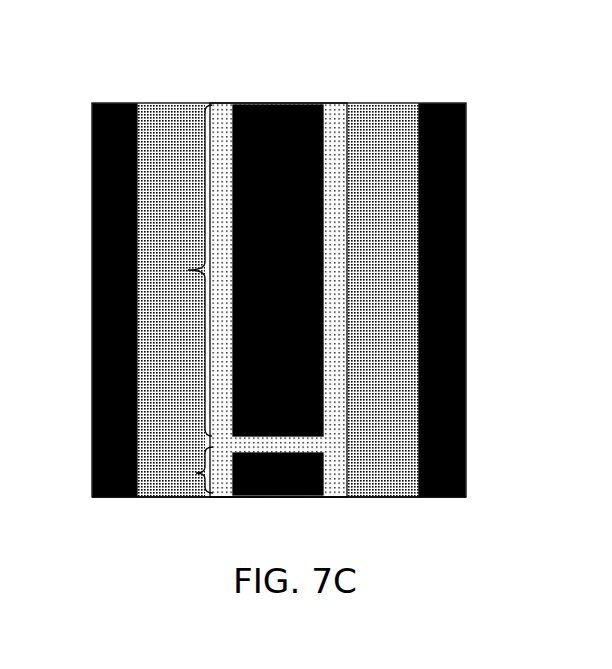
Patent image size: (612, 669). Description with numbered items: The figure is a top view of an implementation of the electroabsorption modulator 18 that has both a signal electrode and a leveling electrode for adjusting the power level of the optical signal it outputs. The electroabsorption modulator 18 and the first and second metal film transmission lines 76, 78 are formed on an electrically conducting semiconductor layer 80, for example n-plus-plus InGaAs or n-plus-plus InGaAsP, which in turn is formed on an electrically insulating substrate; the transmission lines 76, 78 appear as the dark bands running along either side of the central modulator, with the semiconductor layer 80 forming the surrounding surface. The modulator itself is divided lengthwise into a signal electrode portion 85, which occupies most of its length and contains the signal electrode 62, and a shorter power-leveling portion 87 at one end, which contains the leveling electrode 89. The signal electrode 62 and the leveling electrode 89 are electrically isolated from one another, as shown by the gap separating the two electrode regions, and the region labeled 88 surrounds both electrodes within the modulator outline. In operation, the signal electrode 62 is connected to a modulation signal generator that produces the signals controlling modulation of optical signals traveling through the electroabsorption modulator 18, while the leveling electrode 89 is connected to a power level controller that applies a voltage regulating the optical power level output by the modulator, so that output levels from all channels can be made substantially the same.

The electroabsorption modulator 18 is at (230, 65).
The signal electrode 62 is at (323, 233).
The first metal film transmission line 76 is at (115, 103).
The second metal film transmission line 78 is at (445, 77).
The electrically conducting semiconductor layer 80 is at (387, 497).
The signal electrode portion 85 is at (202, 370).
The power-leveling portion 87 is at (203, 465).
The channel region 88 is at (343, 75).
The leveling electrode 89 is at (322, 477).